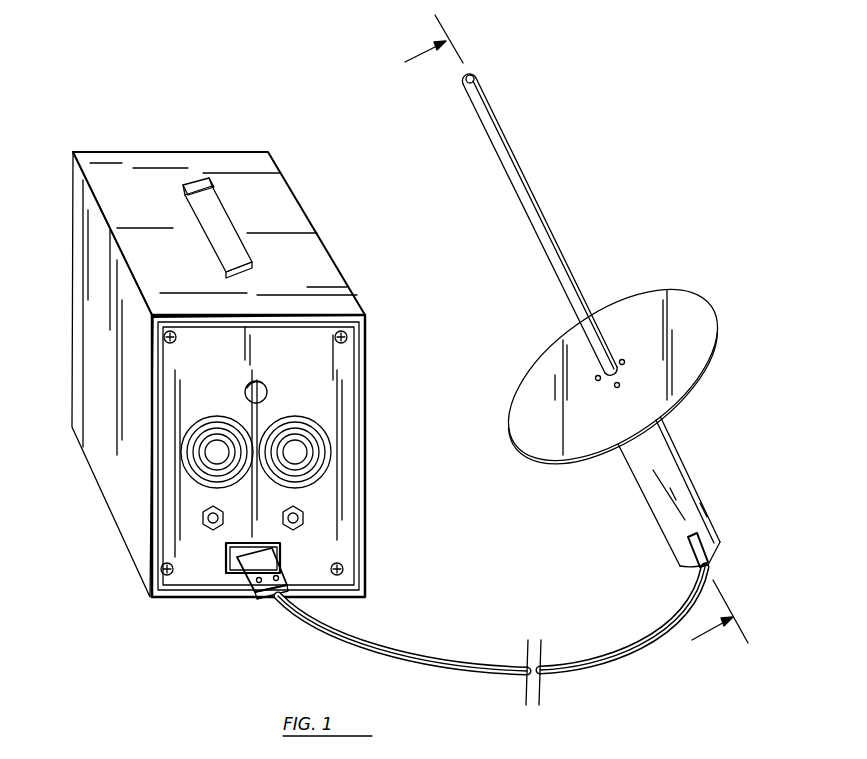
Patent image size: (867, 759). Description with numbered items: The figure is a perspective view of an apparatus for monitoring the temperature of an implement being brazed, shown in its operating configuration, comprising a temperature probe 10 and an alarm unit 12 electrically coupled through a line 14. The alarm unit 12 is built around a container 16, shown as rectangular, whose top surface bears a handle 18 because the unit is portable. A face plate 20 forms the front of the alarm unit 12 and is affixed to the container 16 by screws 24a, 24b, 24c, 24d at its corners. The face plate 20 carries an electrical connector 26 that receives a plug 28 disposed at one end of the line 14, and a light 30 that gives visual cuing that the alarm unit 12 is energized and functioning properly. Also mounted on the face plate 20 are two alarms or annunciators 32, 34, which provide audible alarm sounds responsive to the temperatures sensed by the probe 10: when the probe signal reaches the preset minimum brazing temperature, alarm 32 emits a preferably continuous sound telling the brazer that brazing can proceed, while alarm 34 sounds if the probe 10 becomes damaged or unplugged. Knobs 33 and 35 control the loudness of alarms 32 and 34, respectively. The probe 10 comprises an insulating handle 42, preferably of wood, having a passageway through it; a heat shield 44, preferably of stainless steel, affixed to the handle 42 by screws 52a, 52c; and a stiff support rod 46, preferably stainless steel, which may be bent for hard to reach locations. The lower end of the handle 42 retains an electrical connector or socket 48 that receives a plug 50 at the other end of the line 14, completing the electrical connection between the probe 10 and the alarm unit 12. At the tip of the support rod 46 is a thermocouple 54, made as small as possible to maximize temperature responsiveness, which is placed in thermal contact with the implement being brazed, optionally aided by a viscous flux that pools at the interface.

The temperature probe 10 is at (583, 329).
The alarm unit 12 is at (231, 399).
The line 14 is at (500, 677).
The container 16 is at (82, 402).
The handle 18 is at (219, 228).
The face plate 20 is at (343, 387).
The screw 24a is at (347, 336).
The screw 24b is at (167, 331).
The screw 24c is at (167, 576).
The screw 24d is at (343, 568).
The electrical connector 26 is at (226, 573).
The plug 28 is at (262, 601).
The light 30 is at (261, 382).
The alarm or annunciator 32 is at (182, 452).
The knob 33 is at (201, 521).
The alarm or annunciator 34 is at (331, 450).
The knob 35 is at (305, 518).
The insulating handle 42 is at (696, 489).
The heat shield 44 is at (615, 374).
The support rod 46 is at (539, 212).
The electrical connector or socket 48 is at (708, 548).
The plug 50 is at (710, 567).
The screw 52a is at (598, 381).
The screw 52c is at (622, 359).
The thermocouple 54 is at (473, 75).